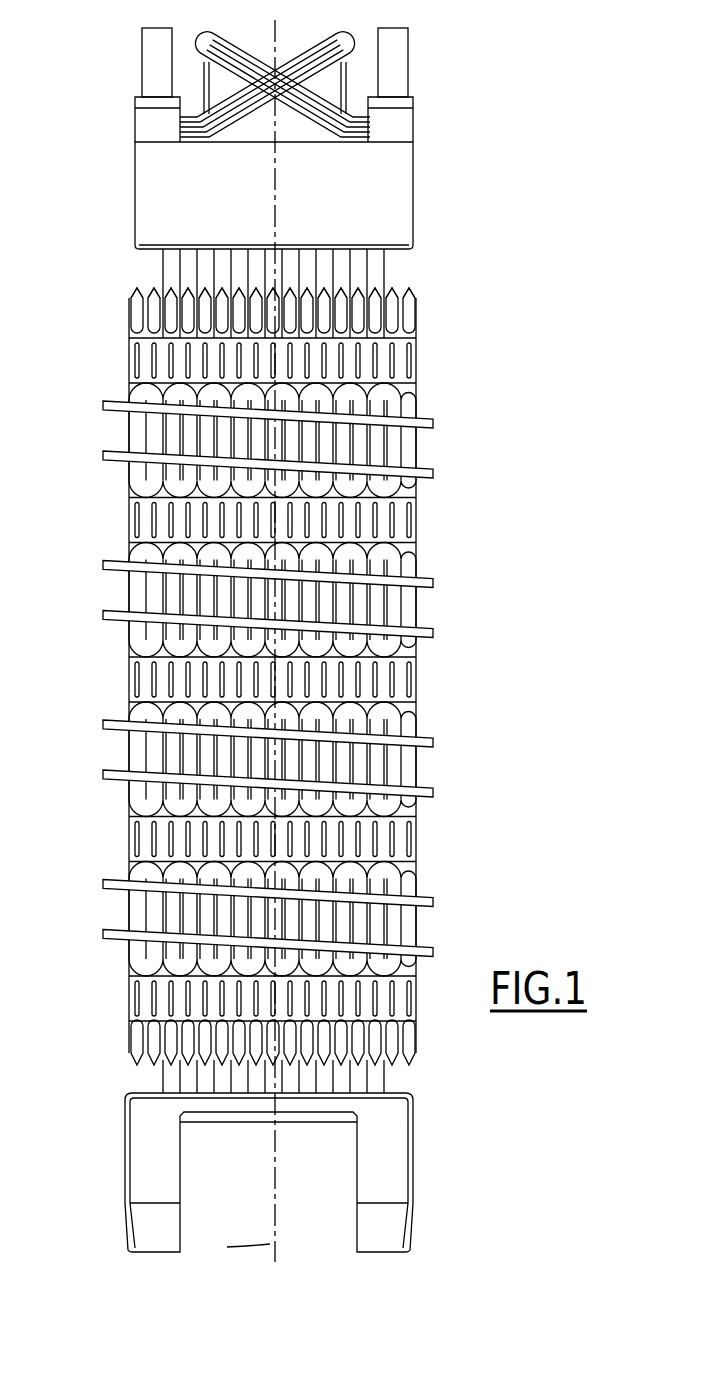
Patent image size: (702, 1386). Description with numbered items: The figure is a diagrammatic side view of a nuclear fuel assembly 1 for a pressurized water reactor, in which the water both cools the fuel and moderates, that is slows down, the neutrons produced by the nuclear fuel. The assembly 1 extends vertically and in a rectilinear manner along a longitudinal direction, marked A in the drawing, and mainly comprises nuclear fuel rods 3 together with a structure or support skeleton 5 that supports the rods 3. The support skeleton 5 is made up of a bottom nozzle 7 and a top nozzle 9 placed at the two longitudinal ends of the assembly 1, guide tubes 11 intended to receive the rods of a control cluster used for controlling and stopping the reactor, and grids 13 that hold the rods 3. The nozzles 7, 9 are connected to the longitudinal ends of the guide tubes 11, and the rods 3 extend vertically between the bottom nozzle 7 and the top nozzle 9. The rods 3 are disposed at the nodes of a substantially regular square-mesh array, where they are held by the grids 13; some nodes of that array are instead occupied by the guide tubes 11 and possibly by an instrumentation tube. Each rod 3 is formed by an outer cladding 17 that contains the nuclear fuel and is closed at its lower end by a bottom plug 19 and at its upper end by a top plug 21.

The nuclear fuel assembly 1 is at (299, 641).
The nuclear fuel rods 3 is at (413, 322).
The support skeleton 5 is at (325, 138).
The bottom nozzle 7 is at (384, 1170).
The top nozzle 9 is at (398, 181).
The guide tubes 11 is at (200, 277).
The grids 13 is at (118, 366).
The outer cladding 17 is at (150, 445).
The bottom plug 19 is at (125, 1060).
The top plug 21 is at (130, 295).